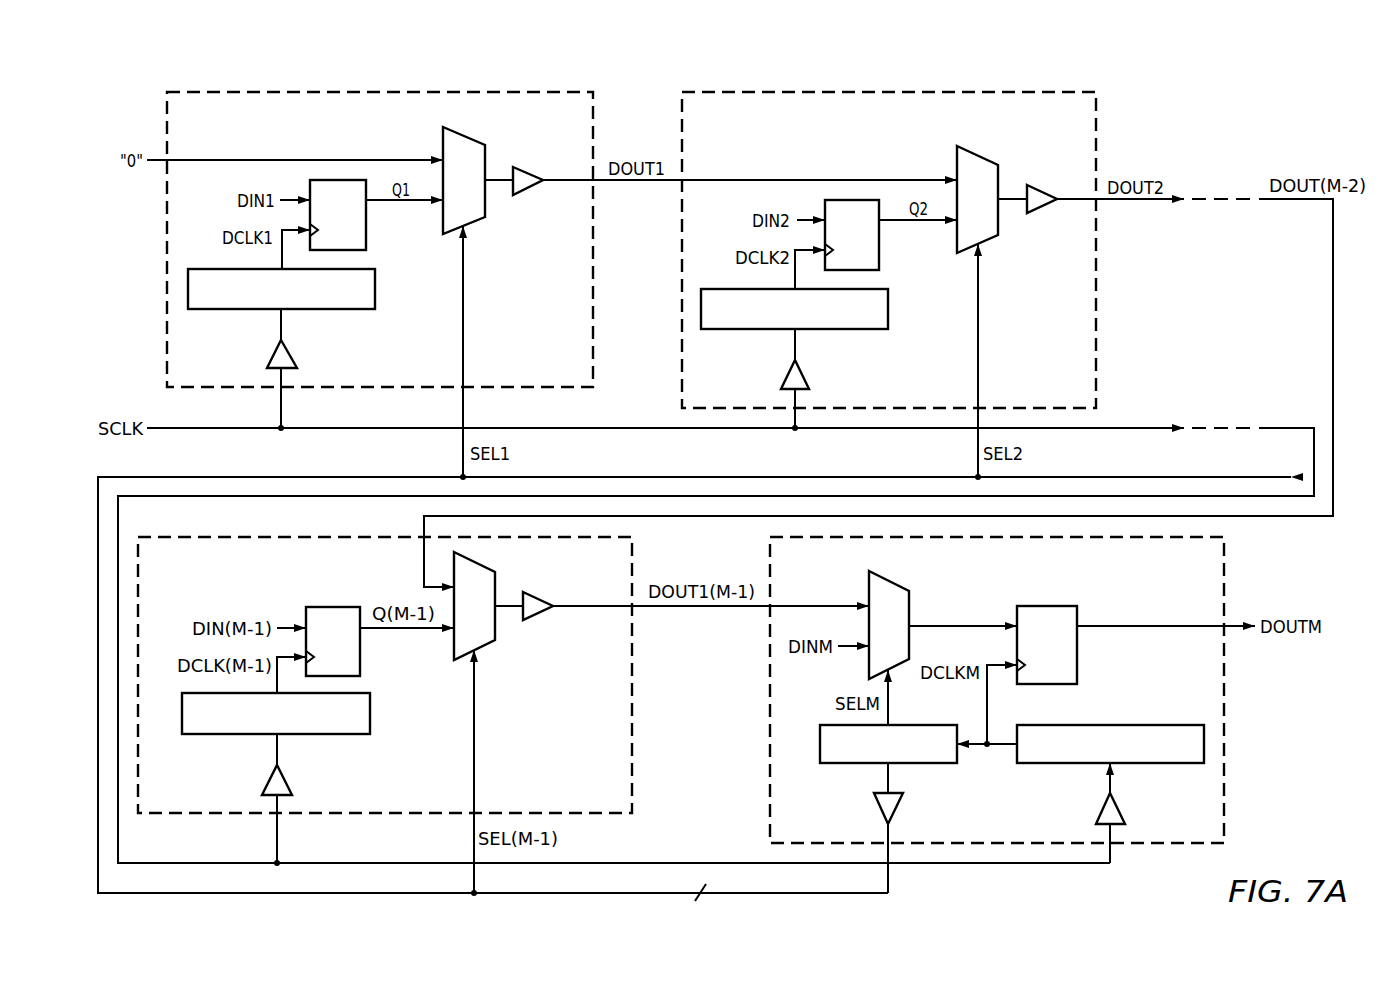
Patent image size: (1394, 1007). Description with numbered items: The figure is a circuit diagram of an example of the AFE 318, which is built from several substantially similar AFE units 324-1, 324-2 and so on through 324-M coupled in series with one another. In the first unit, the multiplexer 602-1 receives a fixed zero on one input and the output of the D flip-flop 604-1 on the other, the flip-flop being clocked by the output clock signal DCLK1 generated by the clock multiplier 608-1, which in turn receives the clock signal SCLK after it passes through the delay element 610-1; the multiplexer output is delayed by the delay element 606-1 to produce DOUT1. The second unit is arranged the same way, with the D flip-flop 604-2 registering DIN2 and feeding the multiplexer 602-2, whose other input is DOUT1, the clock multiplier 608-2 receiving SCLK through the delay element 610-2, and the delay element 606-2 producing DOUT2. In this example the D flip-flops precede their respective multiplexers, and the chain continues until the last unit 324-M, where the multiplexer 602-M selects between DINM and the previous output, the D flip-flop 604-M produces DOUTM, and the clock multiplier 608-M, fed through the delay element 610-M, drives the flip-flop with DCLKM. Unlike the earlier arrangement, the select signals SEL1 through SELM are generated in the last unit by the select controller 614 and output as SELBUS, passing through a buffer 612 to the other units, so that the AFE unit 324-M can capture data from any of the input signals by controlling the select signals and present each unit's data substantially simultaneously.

The AFE 318 is at (1271, 141).
The AFE unit 324-1 is at (275, 129).
The AFE unit 324-2 is at (790, 129).
The AFE unit 324-M is at (1195, 579).
The multiplexer 602-1 is at (485, 158).
The multiplexer 602-2 is at (993, 133).
The multiplexer 602-M is at (909, 606).
The D flip-flop 604-1 is at (366, 236).
The D flip-flop 604-2 is at (879, 256).
The D flip-flop 604-M is at (1047, 606).
The delay element 606-1 is at (530, 188).
The delay element 606-2 is at (1055, 172).
The clock multiplier 608-1 is at (335, 309).
The clock multiplier 608-2 is at (850, 329).
The clock multiplier 608-M is at (1130, 724).
The delay element 610-1 is at (272, 351).
The delay element 610-2 is at (788, 372).
The delay element 610-M is at (1120, 807).
The select buffer 612 is at (878, 807).
The select controller 614 is at (932, 763).